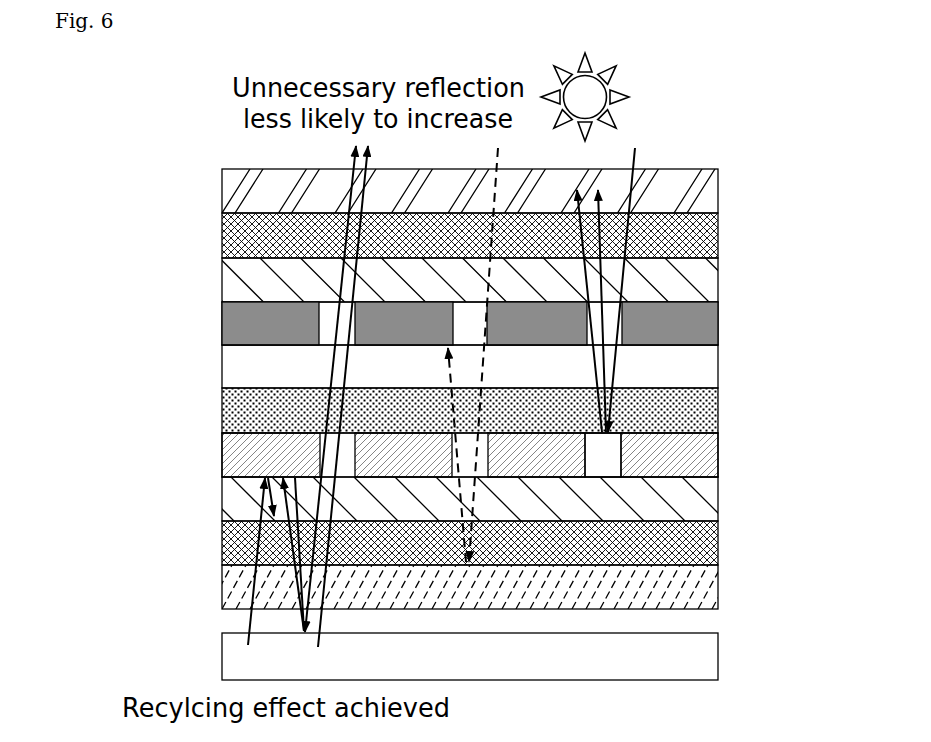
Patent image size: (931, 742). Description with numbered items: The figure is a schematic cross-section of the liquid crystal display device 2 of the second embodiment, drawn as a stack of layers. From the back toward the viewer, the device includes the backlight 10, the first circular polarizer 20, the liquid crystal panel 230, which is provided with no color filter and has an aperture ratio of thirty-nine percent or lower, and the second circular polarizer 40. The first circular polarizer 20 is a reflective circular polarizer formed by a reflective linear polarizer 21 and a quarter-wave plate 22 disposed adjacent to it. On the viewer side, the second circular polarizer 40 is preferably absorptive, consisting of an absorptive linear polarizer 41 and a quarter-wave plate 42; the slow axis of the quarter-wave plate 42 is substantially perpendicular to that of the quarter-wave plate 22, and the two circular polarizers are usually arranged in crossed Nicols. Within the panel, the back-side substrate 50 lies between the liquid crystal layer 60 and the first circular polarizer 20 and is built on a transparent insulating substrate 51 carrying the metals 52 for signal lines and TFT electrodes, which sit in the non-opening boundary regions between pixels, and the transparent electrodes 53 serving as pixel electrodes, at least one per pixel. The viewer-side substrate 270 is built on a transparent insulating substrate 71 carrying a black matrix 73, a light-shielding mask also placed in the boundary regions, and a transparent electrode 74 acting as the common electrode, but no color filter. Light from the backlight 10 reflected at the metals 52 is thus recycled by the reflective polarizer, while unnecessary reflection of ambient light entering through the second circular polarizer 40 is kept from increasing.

The liquid crystal display device 2 is at (729, 146).
The backlight 10 is at (712, 656).
The first circular polarizer 20 is at (786, 522).
The reflective linear polarizer 21 is at (707, 590).
The λ/4 plate 22 is at (707, 545).
The second circular polarizer 40 is at (786, 170).
The absorptive linear polarizer 41 is at (707, 191).
The λ/4 plate 42 is at (707, 235).
The substrate 50 is at (214, 433).
The insulating substrate 51 is at (707, 505).
The metals 52 is at (712, 447).
The transparent electrodes 53 is at (602, 457).
The liquid crystal layer 60 is at (222, 409).
The insulating substrate 71 is at (707, 270).
The black matrix 73 is at (707, 324).
The transparent electrode 74 is at (707, 372).
The liquid crystal panel 230 is at (786, 260).
The viewer-side substrate 270 is at (214, 258).